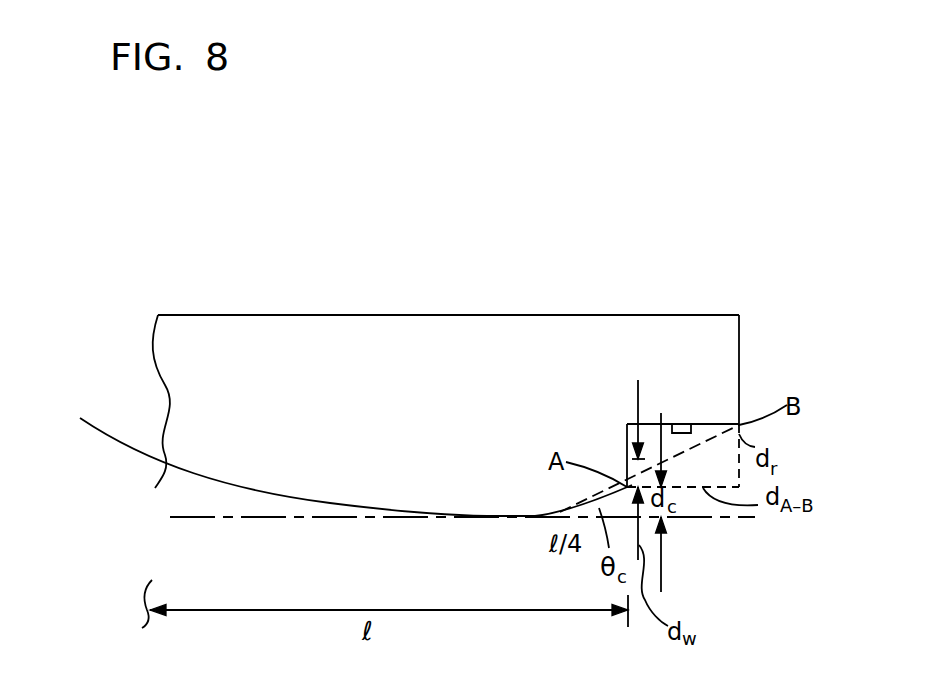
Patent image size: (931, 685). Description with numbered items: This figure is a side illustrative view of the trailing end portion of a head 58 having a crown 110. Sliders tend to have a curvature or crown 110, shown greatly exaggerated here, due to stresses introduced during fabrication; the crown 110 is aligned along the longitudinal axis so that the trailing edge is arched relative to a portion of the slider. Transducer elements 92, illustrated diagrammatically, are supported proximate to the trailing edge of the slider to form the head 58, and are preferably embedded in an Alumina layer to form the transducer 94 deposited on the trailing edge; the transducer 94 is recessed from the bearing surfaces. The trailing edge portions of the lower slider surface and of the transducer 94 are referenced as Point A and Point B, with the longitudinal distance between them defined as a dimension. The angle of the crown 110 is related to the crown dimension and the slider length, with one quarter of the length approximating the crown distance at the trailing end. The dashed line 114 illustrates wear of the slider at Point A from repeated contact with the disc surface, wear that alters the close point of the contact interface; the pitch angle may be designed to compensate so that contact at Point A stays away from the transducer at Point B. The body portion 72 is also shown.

The blade body 72 is at (296, 313).
The head 58 is at (580, 278).
The transducer 94 is at (668, 315).
The crown 110 is at (394, 504).
The transducer elements 92 is at (684, 428).
The dashed line 114 is at (622, 463).